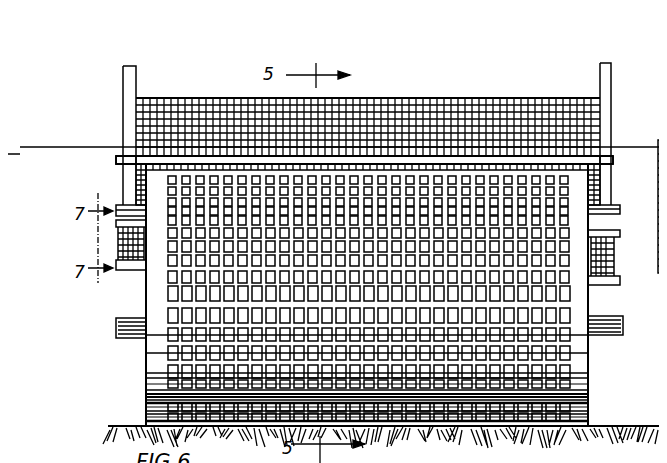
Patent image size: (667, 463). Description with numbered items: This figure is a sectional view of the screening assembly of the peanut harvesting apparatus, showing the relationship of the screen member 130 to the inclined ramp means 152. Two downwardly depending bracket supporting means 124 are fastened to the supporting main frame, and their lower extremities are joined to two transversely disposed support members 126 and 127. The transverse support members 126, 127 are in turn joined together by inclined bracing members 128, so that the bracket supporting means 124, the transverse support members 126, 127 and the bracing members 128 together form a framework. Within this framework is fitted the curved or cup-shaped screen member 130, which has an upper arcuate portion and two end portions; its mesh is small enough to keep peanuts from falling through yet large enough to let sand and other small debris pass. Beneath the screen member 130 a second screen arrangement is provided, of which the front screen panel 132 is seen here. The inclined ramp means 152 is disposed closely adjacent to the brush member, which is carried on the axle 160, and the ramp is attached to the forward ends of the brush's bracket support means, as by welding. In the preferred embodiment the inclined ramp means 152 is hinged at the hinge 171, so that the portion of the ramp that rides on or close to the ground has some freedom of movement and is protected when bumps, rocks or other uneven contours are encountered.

The bracket supporting means 124 is at (114, 78).
The transverse support member 126 is at (120, 198).
The transverse support member 127 is at (126, 150).
The inclined bracing member 128 is at (120, 157).
The screen member 130 is at (371, 90).
The front screen panel 132 is at (129, 255).
The inclined ramp means 152 is at (138, 350).
The axle 160 is at (613, 323).
The hinge 171 is at (138, 380).